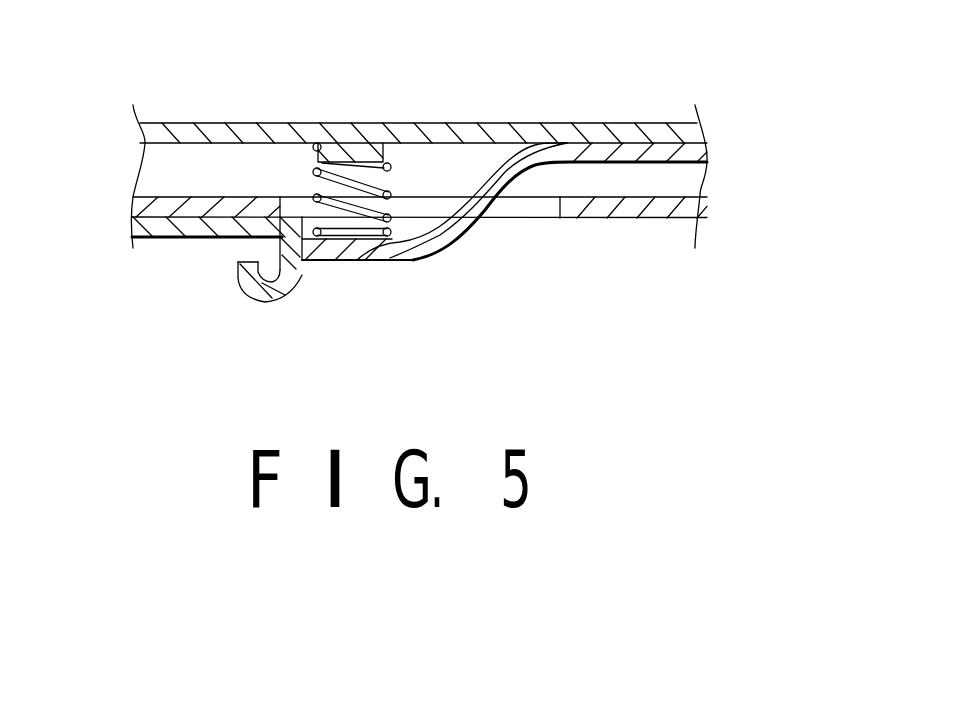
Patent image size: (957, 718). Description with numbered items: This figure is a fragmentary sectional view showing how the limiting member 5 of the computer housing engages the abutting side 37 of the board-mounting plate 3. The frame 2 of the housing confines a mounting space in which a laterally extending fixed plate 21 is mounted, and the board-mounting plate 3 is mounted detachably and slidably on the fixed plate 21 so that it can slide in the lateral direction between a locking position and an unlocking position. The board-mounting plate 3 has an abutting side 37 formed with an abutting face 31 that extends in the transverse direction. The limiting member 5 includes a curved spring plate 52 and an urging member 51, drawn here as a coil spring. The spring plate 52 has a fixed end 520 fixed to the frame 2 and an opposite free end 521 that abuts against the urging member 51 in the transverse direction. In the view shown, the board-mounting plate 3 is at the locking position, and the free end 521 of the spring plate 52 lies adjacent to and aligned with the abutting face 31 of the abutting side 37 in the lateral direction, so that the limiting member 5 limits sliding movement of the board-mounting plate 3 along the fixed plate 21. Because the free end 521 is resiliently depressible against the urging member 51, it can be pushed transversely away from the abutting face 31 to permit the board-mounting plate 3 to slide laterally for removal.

The frame 2 is at (423, 133).
The fixed plate 21 is at (160, 238).
The board-mounting plate 3 is at (214, 235).
The abutting face 31 is at (353, 261).
The abutting side 37 is at (283, 297).
The limiting member 5 is at (530, 240).
The urging member 51 is at (313, 172).
The curved spring plate 52 is at (410, 260).
The fixed end 520 is at (673, 160).
The free end 521 is at (376, 261).